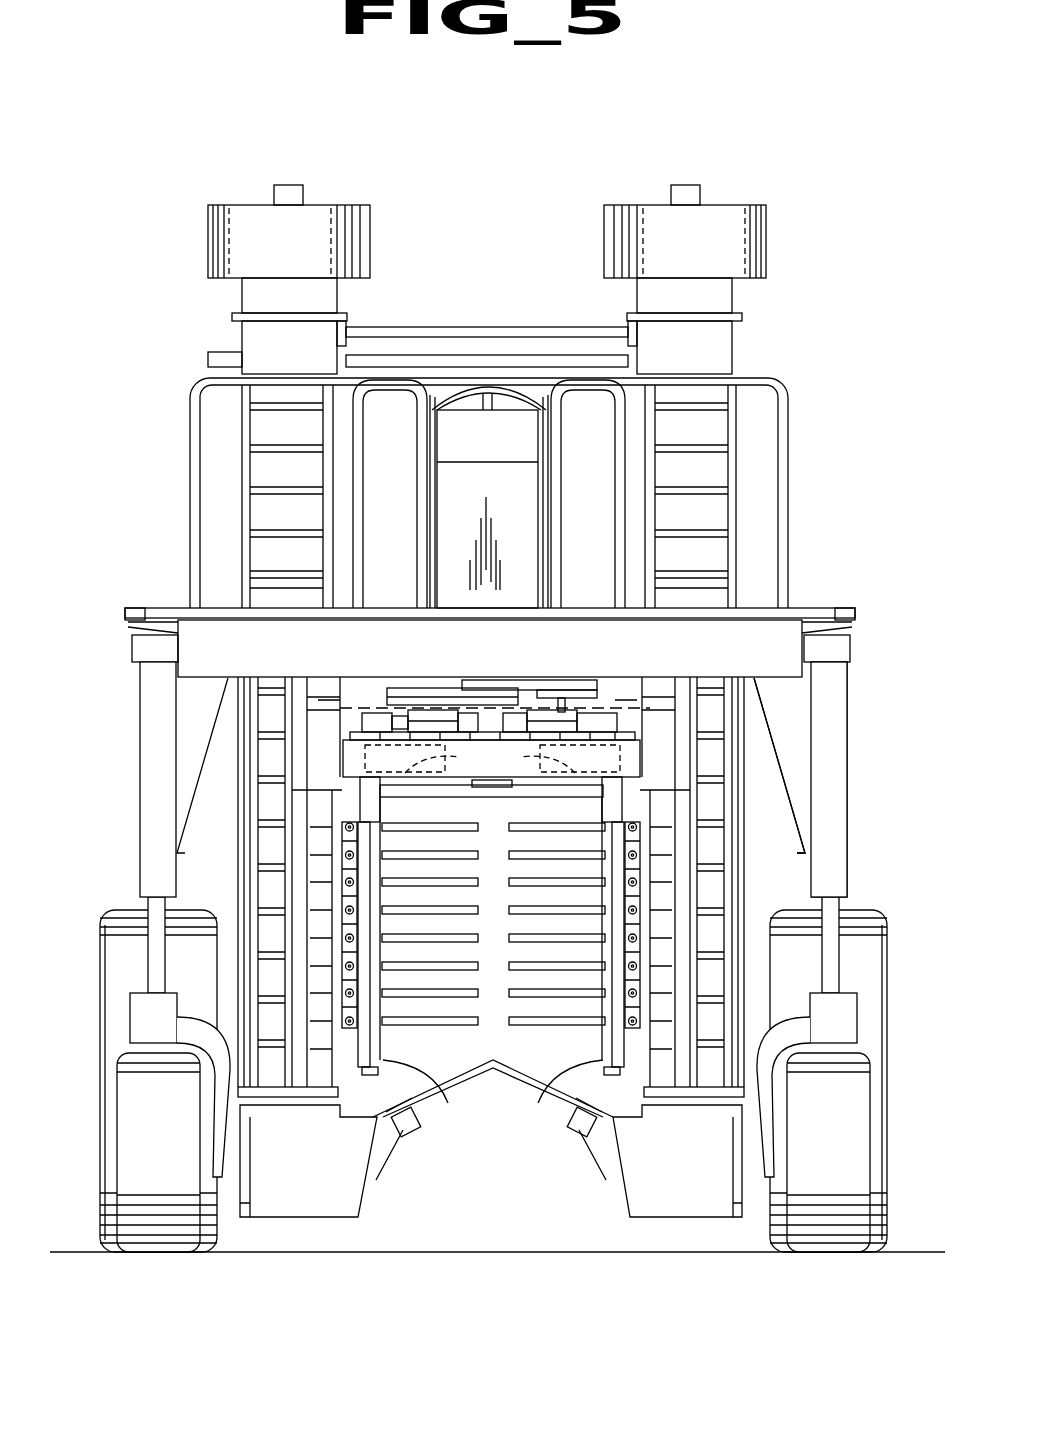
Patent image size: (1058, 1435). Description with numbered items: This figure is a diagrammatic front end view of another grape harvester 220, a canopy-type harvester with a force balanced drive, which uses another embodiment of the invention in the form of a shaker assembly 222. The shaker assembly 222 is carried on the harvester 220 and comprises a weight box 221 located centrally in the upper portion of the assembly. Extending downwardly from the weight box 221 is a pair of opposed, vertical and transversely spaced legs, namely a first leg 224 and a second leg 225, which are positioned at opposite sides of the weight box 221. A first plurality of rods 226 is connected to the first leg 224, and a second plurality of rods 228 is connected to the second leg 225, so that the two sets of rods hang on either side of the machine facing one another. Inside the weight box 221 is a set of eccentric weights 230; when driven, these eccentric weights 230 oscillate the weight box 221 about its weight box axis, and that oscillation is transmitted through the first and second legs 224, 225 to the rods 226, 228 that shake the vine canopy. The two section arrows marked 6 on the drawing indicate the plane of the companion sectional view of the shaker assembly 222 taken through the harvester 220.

The harvester 220 is at (651, 151).
The weight box 221 is at (492, 738).
The shaker assembly 222 is at (699, 1238).
The first leg 224 is at (432, 1118).
The second leg 225 is at (554, 1118).
The first plurality of rods 226 is at (437, 990).
The second plurality of rods 228 is at (549, 990).
The eccentric weights 230 is at (491, 768).
The section line 6- 6 is at (318, 640).